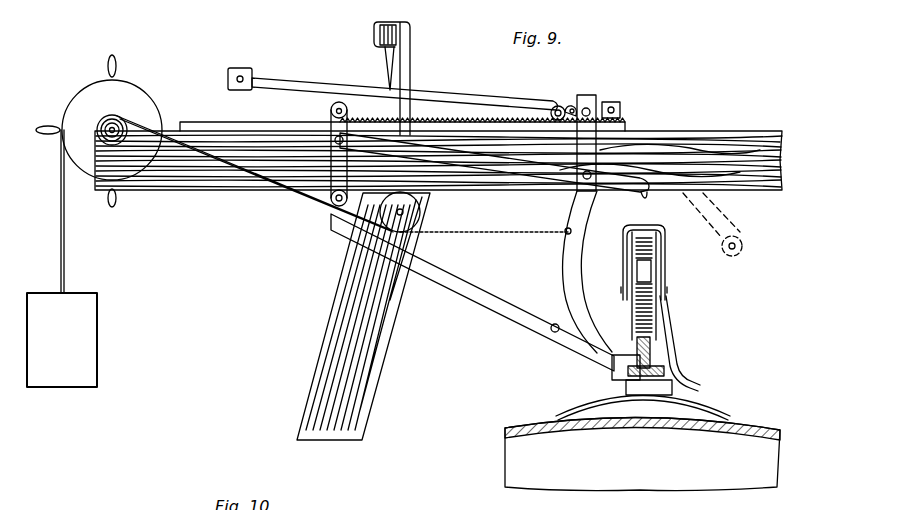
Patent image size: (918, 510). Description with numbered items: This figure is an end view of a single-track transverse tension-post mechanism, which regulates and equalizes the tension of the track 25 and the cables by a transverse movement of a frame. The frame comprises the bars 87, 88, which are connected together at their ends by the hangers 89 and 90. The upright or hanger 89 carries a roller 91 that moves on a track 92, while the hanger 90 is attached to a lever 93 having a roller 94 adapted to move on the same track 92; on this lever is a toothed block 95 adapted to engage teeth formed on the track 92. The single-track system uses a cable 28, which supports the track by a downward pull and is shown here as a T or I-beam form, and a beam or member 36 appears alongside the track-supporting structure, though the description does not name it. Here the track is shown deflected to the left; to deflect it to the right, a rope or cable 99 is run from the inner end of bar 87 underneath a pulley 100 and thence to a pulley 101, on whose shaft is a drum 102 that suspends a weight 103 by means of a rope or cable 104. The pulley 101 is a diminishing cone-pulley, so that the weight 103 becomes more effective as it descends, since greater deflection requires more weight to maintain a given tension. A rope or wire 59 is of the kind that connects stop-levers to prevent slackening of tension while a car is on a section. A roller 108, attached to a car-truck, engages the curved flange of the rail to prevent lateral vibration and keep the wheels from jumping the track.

The track 25 is at (652, 356).
The cable 28 is at (598, 104).
The board 36 is at (737, 117).
The rope or wire 59 is at (393, 71).
The bar 87 is at (503, 311).
The bar 88 is at (538, 170).
The upright or hanger 89 is at (335, 178).
The upright or hanger 90 is at (577, 263).
The roller 91 is at (331, 108).
The track 92 is at (270, 121).
The lever 93 is at (538, 102).
The roller 94 is at (567, 106).
The toothed block 95 is at (622, 111).
The rope or cable 99 is at (273, 183).
The pulley 100 is at (418, 212).
The pulley 101 is at (131, 118).
The drum 102 is at (82, 93).
The weight 103 is at (97, 338).
The rope or cable 104 is at (64, 263).
The roller 108 is at (677, 387).